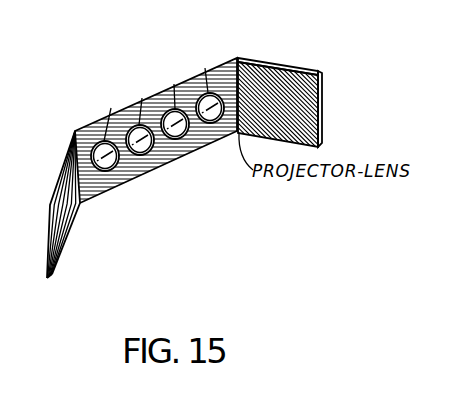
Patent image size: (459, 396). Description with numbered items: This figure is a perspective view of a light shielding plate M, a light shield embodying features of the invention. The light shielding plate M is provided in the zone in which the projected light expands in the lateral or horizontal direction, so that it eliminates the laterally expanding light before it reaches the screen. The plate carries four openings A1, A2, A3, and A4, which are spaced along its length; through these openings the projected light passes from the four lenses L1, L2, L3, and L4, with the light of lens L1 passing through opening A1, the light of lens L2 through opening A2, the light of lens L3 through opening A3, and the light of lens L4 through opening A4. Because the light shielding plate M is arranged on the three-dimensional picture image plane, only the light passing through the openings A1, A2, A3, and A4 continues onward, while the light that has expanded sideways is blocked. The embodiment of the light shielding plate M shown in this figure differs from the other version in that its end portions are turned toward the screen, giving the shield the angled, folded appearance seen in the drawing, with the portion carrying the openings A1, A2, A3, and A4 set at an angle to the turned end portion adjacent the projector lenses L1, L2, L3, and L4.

The opening A1 is at (96, 116).
The opening A2 is at (134, 103).
The opening A3 is at (169, 88).
The opening A4 is at (209, 72).
The lens L1 is at (104, 171).
The lens L2 is at (140, 155).
The lens L3 is at (176, 139).
The lens L4 is at (211, 123).
The light shielding plate M is at (239, 58).